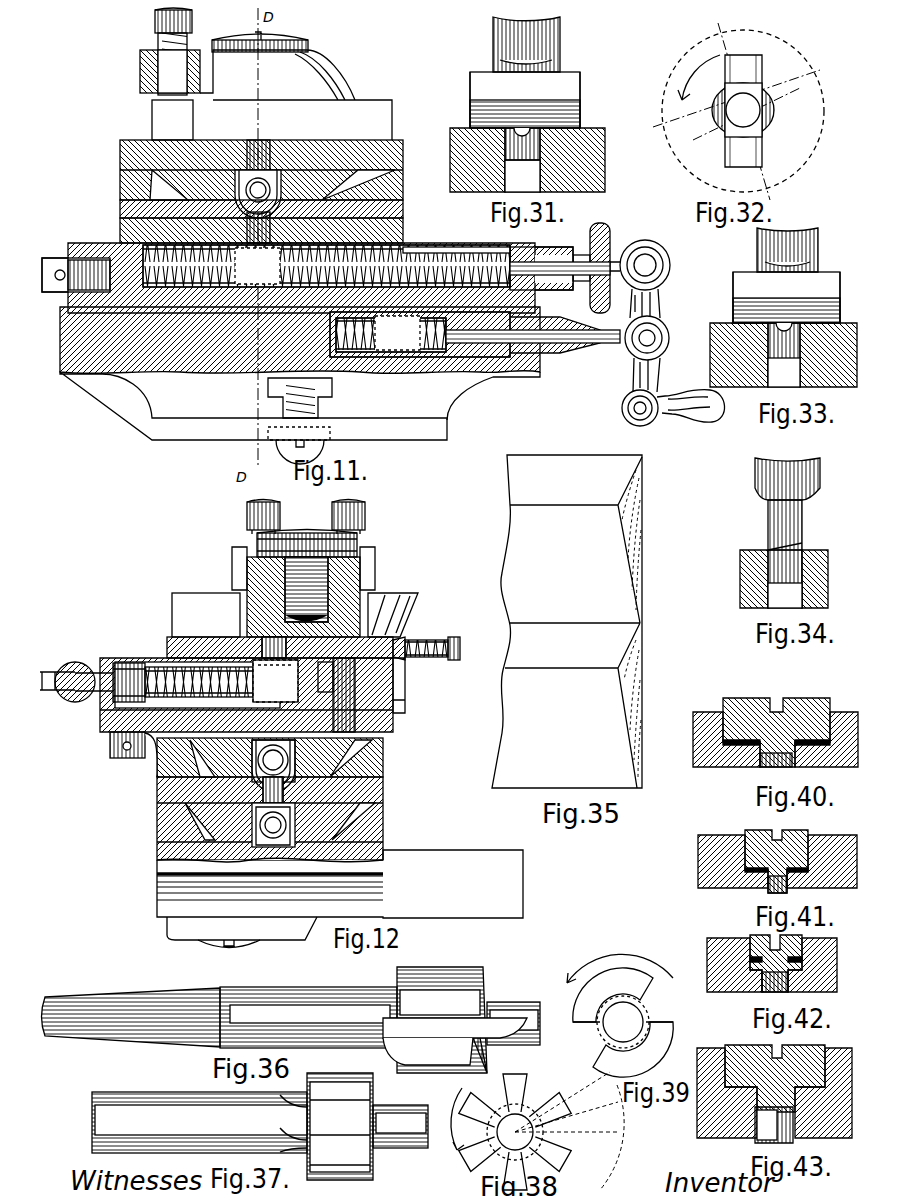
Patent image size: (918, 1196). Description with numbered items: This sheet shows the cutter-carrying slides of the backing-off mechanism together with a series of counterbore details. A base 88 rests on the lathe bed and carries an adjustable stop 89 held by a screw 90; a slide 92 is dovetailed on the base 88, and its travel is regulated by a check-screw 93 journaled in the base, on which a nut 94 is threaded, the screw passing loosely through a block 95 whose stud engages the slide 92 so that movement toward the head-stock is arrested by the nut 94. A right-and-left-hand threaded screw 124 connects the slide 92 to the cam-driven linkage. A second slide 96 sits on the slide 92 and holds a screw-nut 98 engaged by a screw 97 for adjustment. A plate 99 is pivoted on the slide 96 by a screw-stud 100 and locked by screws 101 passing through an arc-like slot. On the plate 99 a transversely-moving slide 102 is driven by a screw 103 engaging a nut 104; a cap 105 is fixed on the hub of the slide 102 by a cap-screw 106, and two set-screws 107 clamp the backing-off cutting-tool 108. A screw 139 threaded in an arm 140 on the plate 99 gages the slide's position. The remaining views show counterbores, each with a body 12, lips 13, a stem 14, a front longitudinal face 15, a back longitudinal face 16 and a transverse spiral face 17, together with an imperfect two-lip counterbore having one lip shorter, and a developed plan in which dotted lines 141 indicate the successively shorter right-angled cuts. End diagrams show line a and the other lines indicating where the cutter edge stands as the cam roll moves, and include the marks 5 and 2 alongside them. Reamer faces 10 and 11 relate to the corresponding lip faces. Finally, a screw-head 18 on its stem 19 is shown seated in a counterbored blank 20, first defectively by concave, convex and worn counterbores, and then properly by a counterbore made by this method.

In FIG. 32, the line 5 is at (804, 74).
In FIG. 32, the line 2 is at (690, 134).
In FIG. 32, the line a is at (644, 120).
In FIG. 38, the line a is at (604, 1102).
In FIG. 35, the front cutting-face 10 is at (567, 624).
In FIG. 35, the back face 11 is at (551, 597).
In FIG. 31, the body 12 is at (526, 44).
In FIG. 32, the body 12 is at (750, 110).
In FIG. 33, the body 12 is at (787, 250).
In FIG. 34, the body 12 is at (787, 479).
In FIG. 36, the body 12 is at (220, 1017).
In FIG. 37, the body 12 is at (199, 1122).
In FIG. 31, the lips 13 is at (470, 80).
In FIG. 32, the lips 13 is at (743, 111).
In FIG. 33, the lips 13 is at (733, 282).
In FIG. 34, the lips 13 is at (795, 525).
In FIG. 36, the lips 13 is at (445, 1080).
In FIG. 37, the lips 13 is at (340, 1119).
In FIG. 38, the lips 13 is at (520, 1128).
In FIG. 39, the lips 13 is at (654, 1055).
In FIG. 31, the stem, pin, or teat 14 is at (522, 160).
In FIG. 32, the stem, pin, or teat 14 is at (743, 110).
In FIG. 33, the stem, pin, or teat 14 is at (784, 355).
In FIG. 34, the stem, pin, or teat 14 is at (785, 579).
In FIG. 36, the stem, pin, or teat 14 is at (523, 1023).
In FIG. 37, the stem, pin, or teat 14 is at (410, 1126).
In FIG. 38, the stem, pin, or teat 14 is at (515, 1132).
In FIG. 39, the stem, pin, or teat 14 is at (623, 1022).
In FIG. 31, the front longitudinal face 15 is at (525, 103).
In FIG. 32, the front longitudinal face 15 is at (700, 73).
In FIG. 33, the front longitudinal face 15 is at (786, 305).
In FIG. 34, the front longitudinal face 15 is at (778, 545).
In FIG. 36, the front longitudinal face 15 is at (455, 1028).
In FIG. 37, the front longitudinal face 15 is at (312, 1095).
In FIG. 38, the front longitudinal face 15 is at (569, 1109).
In FIG. 39, the front longitudinal face 15 is at (662, 1026).
In FIG. 31, the back longitudinal face 16 is at (525, 100).
In FIG. 32, the back longitudinal face 16 is at (670, 142).
In FIG. 33, the back longitudinal face 16 is at (786, 297).
In FIG. 36, the back longitudinal face 16 is at (435, 1054).
In FIG. 37, the back longitudinal face 16 is at (314, 1141).
In FIG. 38, the back longitudinal face 16 is at (540, 1087).
In FIG. 39, the back longitudinal face 16 is at (603, 1060).
In FIG. 35, the transverse spiral face 17 is at (636, 592).
In FIG. 36, the transverse spiral face 17 is at (482, 992).
In FIG. 37, the transverse spiral face 17 is at (376, 1092).
In FIG. 38, the transverse spiral face 17 is at (496, 1129).
In FIG. 39, the transverse spiral face 17 is at (623, 1022).
In FIG. 40, the head of the screw 18 is at (776, 726).
In FIG. 41, the head of the screw 18 is at (774, 855).
In FIG. 42, the head of the screw 18 is at (752, 938).
In FIG. 43, the head of the screw 18 is at (745, 1048).
In FIG. 40, the stem of the screw 19 is at (790, 773).
In FIG. 41, the stem of the screw 19 is at (768, 888).
In FIG. 42, the stem of the screw 19 is at (762, 990).
In FIG. 43, the stem of the screw 19 is at (774, 1125).
In FIG. 31, the counterbored blank 20 is at (527, 160).
In FIG. 33, the counterbored blank 20 is at (783, 355).
In FIG. 34, the counterbored blank 20 is at (748, 580).
In FIG. 40, the counterbored blank 20 is at (775, 740).
In FIG. 41, the counterbored blank 20 is at (777, 861).
In FIG. 42, the counterbored blank 20 is at (783, 965).
In FIG. 43, the counterbored blank 20 is at (774, 1093).
In FIG. 11, the base 88 is at (300, 358).
In FIG. 12, the base 88 is at (340, 884).
In FIG. 11, the adjustable stop 89 is at (253, 407).
In FIG. 12, the adjustable stop 89 is at (265, 942).
In FIG. 11, the screw 90 is at (280, 446).
In FIG. 12, the screw 90 is at (222, 948).
In FIG. 11, the slide 92 is at (546, 306).
In FIG. 12, the slide 92 is at (383, 806).
In FIG. 11, the check-screw 93 is at (345, 348).
In FIG. 11, the nut 94 is at (475, 334).
In FIG. 11, the block 95 is at (489, 396).
In FIG. 11, the second slide 96 is at (400, 236).
In FIG. 12, the second slide 96 is at (383, 736).
In FIG. 11, the screw 97 is at (549, 268).
In FIG. 11, the screw-nut 98 is at (257, 266).
In FIG. 11, the plate 99 is at (400, 214).
In FIG. 12, the plate 99 is at (100, 708).
In FIG. 12, the screw-stud 100 is at (336, 695).
In FIG. 12, the screws 101 is at (92, 716).
In FIG. 11, the transversely-moving slide 102 is at (400, 148).
In FIG. 12, the transversely-moving slide 102 is at (168, 647).
In FIG. 11, the screw 103 is at (258, 190).
In FIG. 12, the screw 103 is at (170, 672).
In FIG. 11, the nut 104 is at (290, 150).
In FIG. 12, the nut 104 is at (275, 681).
In FIG. 11, the cap 105 is at (266, 95).
In FIG. 12, the cap 105 is at (234, 570).
In FIG. 11, the cap-screw 106 is at (300, 38).
In FIG. 12, the cap-screw 106 is at (307, 544).
In FIG. 11, the set-screws 107 is at (158, 30).
In FIG. 12, the set-screws 107 is at (247, 522).
In FIG. 11, the backing-off cutting-tool 108 is at (172, 120).
In FIG. 12, the backing-off cutting-tool 108 is at (416, 620).
In FIG. 11, the right-and-left-hand threaded screw 124 is at (72, 267).
In FIG. 12, the screw 139 is at (470, 672).
In FIG. 12, the arm 140 is at (405, 688).
In FIG. 35, the dotted lines 141 is at (648, 625).